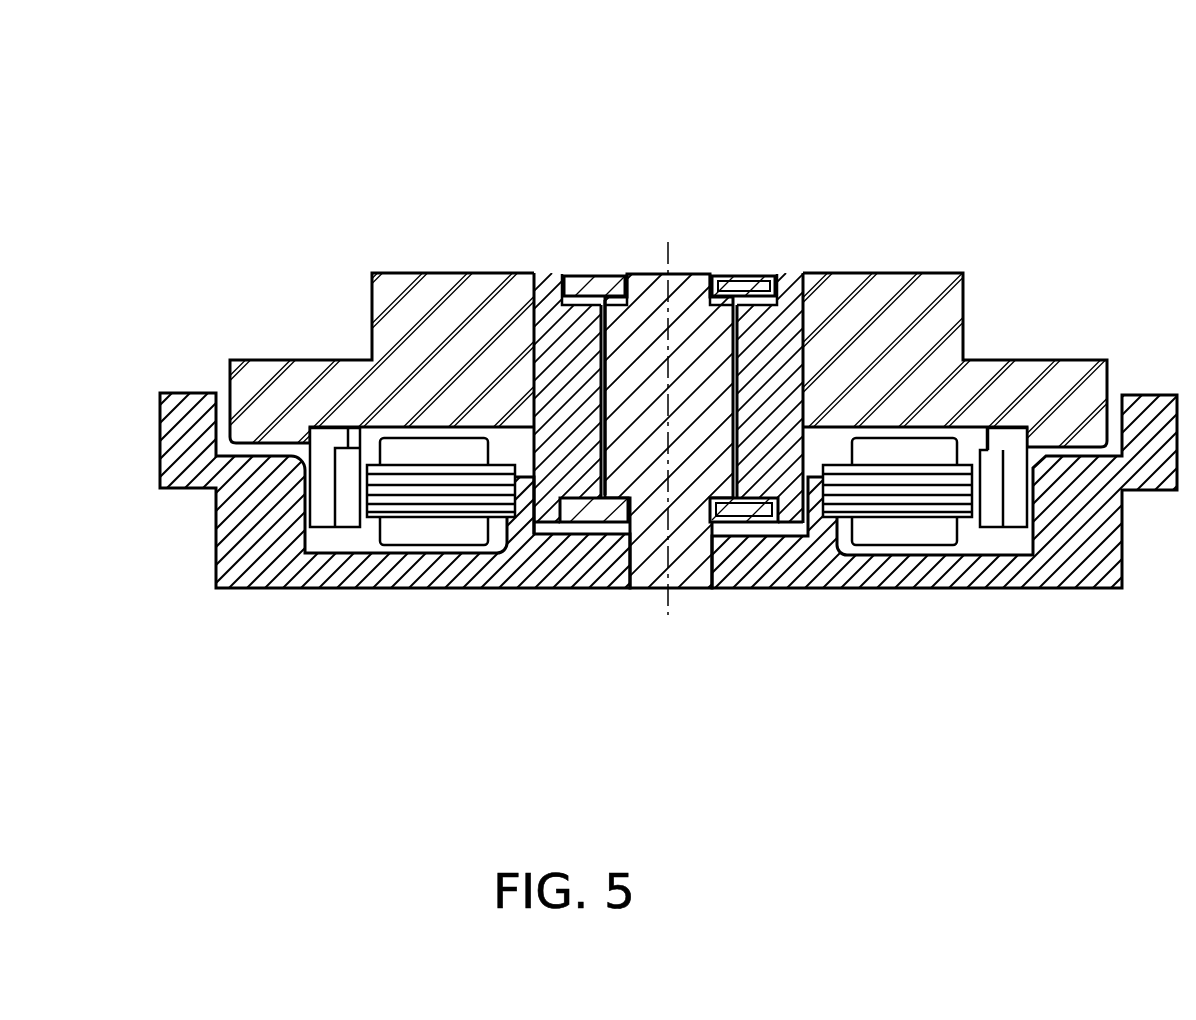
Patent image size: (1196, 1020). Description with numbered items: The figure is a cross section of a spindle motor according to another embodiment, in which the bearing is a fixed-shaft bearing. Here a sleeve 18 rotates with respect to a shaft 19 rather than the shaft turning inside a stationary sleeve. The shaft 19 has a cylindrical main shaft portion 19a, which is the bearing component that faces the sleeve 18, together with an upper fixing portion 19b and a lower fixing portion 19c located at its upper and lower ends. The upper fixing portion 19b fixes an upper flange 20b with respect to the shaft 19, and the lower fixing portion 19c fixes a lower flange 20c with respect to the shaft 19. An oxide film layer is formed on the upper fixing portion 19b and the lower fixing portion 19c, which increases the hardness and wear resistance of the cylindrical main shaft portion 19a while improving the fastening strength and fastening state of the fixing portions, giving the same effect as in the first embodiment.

The sleeve 18 is at (565, 340).
The shaft 19 is at (677, 297).
The cylindrical main shaft portion 19a is at (600, 385).
The upper fixing portion 19b is at (720, 283).
The lower fixing portion 19c is at (738, 514).
The upper flange 20b is at (740, 285).
The lower flange 20c is at (760, 513).